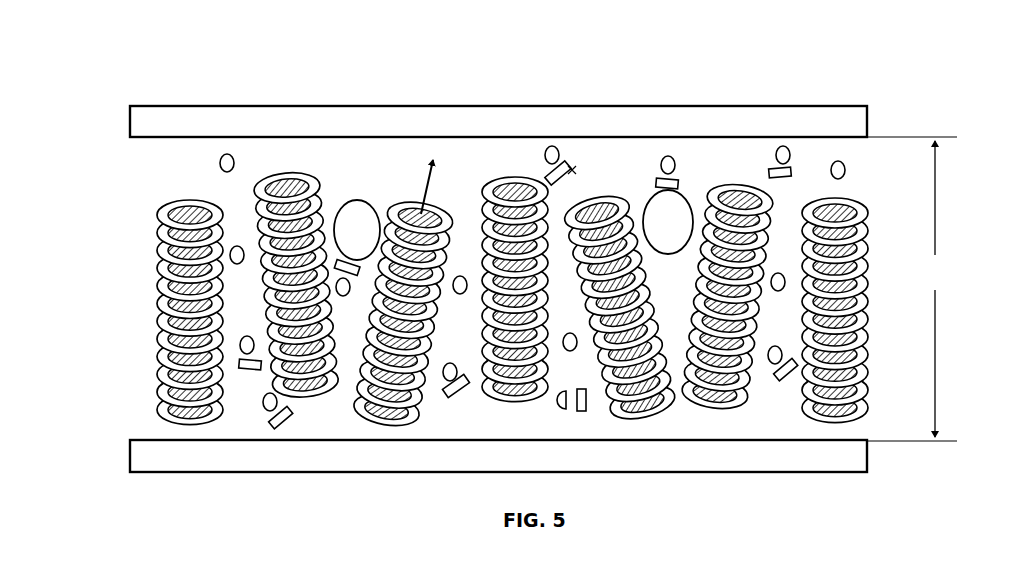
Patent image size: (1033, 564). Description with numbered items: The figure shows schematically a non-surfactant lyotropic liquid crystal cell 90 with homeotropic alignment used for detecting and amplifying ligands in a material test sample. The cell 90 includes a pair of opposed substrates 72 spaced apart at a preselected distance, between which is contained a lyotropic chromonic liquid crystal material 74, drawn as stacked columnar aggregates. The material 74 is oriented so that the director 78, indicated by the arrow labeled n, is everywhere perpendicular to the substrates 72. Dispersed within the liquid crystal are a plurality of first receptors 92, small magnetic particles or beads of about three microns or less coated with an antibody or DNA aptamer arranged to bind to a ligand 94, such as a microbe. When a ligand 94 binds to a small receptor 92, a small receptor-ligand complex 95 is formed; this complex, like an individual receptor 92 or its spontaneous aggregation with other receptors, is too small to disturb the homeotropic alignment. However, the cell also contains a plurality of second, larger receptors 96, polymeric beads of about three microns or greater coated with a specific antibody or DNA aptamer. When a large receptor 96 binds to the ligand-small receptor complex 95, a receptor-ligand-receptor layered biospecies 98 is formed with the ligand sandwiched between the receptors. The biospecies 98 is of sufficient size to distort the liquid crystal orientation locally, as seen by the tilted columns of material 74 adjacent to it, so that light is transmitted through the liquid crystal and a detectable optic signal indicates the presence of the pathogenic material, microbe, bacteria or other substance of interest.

The non-surfactant lyotropic liquid crystal cell 90 is at (96, 122).
The opposed substrates 72 is at (870, 131).
The lyotropic chromonic liquid crystal material 74 is at (149, 208).
The director 78 is at (432, 195).
The first receptor 92 is at (220, 152).
The ligand 94 is at (460, 395).
The small receptor-ligand complex 95 is at (565, 160).
The second larger receptor 96 is at (351, 190).
The receptor-ligand-receptor layered biospecies 98 is at (686, 177).